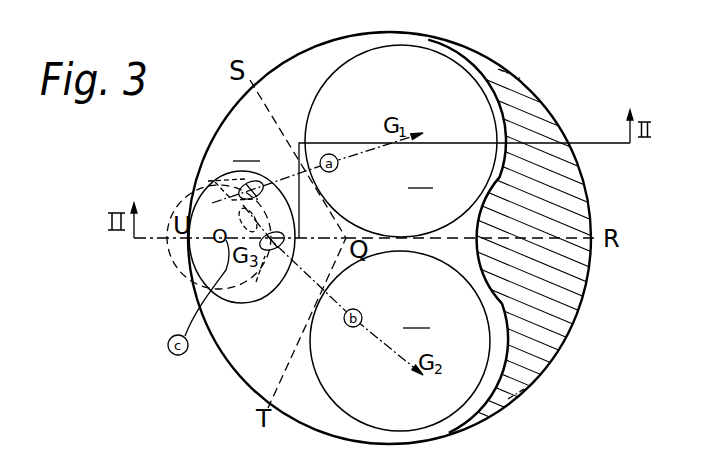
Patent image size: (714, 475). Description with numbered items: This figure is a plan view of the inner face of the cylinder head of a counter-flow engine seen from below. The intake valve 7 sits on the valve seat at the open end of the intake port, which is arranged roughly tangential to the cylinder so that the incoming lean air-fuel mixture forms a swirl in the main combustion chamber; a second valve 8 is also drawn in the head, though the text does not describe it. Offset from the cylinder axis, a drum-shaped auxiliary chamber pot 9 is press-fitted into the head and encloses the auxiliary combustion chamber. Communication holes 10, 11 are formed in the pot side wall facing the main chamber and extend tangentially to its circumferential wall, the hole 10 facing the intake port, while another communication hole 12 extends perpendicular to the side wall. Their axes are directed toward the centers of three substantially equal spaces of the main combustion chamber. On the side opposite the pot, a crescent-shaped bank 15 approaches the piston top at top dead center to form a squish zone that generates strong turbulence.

The intake valve 7 is at (443, 68).
The second piston 8 is at (450, 403).
The auxiliary chamber pot 9 is at (294, 262).
The communication hole 10 is at (222, 196).
The communication hole 11 is at (270, 248).
The communication hole 12 is at (193, 265).
The crescent-shaped bank 15 is at (561, 274).